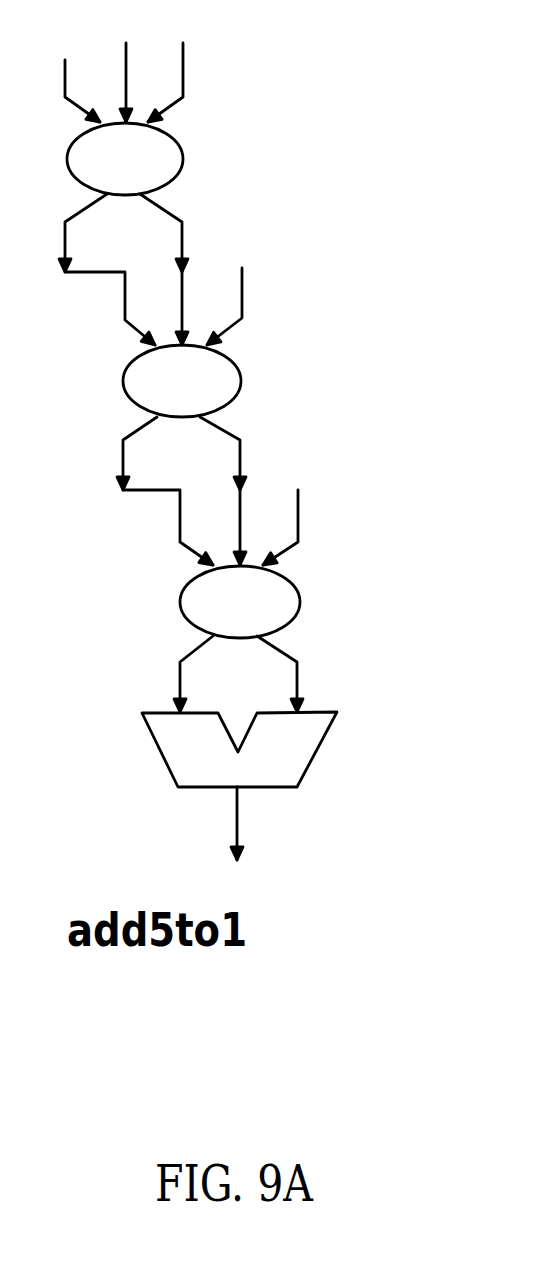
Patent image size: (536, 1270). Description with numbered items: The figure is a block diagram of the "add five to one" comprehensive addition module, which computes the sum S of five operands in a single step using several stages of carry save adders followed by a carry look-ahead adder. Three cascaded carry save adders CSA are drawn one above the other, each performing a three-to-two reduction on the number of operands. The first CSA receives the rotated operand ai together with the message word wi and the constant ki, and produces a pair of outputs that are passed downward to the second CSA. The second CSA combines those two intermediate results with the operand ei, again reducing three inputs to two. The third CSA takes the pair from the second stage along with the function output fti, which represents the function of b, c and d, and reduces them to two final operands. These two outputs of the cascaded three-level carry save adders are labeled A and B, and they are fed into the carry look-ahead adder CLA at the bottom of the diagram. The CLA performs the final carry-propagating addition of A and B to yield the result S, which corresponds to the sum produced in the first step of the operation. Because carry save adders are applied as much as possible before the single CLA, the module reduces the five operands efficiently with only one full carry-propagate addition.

The operand a ai is at (74, 75).
The operand w[i] wi is at (138, 64).
The operand k[i] ki is at (179, 64).
The operand e ei is at (228, 283).
The function output f(b, c, d) fti is at (286, 508).
The carry save adder CSA is at (183, 380).
The carry look-ahead adder CLA is at (239, 749).
The CSA output A is at (170, 674).
The CSA output B is at (300, 674).
The sum output Si S is at (262, 830).